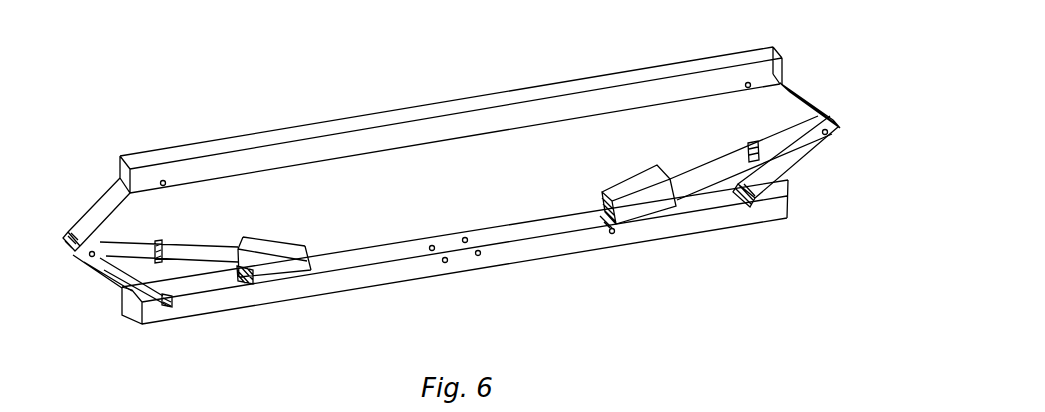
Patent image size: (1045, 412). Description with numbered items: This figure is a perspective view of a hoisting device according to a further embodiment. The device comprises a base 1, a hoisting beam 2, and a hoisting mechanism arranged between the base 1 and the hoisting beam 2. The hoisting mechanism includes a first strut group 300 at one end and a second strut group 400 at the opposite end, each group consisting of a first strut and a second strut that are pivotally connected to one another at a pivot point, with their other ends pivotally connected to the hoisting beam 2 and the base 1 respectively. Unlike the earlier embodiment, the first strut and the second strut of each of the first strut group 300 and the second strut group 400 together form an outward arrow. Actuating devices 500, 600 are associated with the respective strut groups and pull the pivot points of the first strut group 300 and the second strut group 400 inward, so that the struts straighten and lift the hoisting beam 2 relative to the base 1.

The base 1 is at (470, 260).
The hoisting beam 2 is at (411, 131).
The first strut group 300 is at (97, 238).
The second strut group 400 is at (797, 117).
The actuating device 500 is at (220, 257).
The actuating device 600 is at (645, 208).